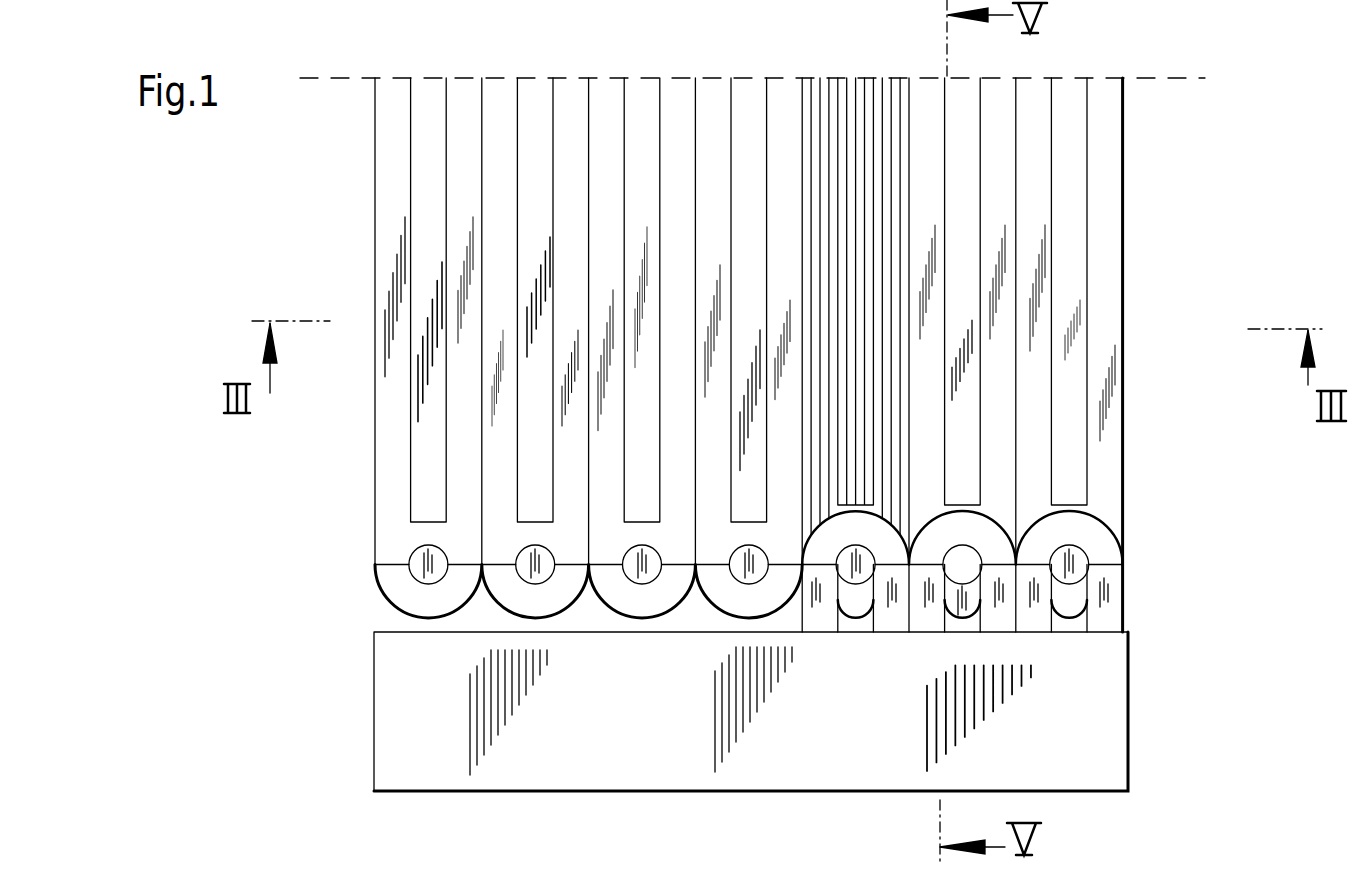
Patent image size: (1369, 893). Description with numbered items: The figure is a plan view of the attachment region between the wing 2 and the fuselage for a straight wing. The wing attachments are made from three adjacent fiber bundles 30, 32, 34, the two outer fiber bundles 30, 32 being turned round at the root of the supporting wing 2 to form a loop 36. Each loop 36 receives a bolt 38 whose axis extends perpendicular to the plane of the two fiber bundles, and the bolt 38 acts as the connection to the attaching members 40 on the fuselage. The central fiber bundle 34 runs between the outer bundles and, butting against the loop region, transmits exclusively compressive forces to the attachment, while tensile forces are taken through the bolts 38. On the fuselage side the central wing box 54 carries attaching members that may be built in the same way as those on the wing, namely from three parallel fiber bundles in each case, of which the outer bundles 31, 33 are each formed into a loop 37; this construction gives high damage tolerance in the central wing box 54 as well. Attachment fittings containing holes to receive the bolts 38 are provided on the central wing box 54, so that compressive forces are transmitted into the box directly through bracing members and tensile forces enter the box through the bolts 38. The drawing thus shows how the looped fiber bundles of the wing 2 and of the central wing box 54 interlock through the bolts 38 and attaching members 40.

The wing 2 is at (1127, 268).
The fiber bundle 30 is at (397, 105).
The fiber bundle 31 is at (822, 613).
The fiber bundle 32 is at (470, 107).
The fiber bundle 33 is at (892, 608).
The central fiber bundle 34 is at (435, 117).
The loop 36 is at (402, 588).
The loop 37 is at (1082, 532).
The bolt 38 is at (1073, 558).
The attaching members 40 is at (1103, 587).
The central wing box 54 is at (385, 737).